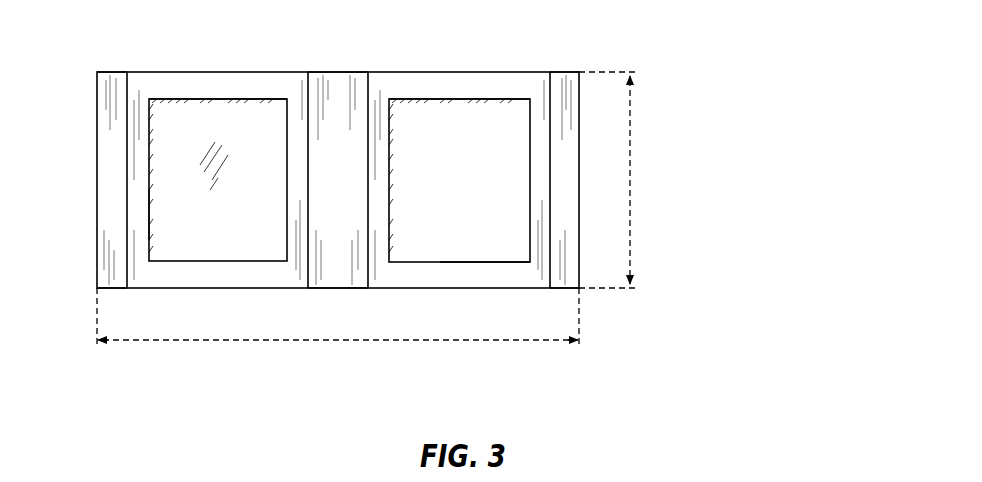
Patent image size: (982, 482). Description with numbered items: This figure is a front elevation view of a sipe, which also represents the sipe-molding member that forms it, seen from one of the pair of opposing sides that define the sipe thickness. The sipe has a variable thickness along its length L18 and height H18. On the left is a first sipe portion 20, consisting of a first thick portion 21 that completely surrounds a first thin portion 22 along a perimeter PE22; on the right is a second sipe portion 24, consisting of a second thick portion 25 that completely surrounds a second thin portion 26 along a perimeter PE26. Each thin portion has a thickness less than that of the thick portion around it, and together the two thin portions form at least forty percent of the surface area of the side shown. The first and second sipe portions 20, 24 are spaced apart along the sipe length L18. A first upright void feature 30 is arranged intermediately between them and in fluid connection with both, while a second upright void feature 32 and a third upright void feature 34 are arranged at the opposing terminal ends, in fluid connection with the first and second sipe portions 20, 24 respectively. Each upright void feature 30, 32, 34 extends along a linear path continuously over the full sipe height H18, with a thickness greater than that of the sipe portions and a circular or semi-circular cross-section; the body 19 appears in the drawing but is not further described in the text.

The sheet / frame panel 19 is at (187, 280).
The first sipe portion 20 is at (308, 72).
The first thick portion 21 is at (247, 86).
The first thin portion 22 is at (218, 180).
The second sipe portion 24 is at (550, 72).
The second thick portion 25 is at (483, 86).
The second thin portion 26 is at (459, 180).
The first upright void feature 30 is at (338, 72).
The second upright void feature 32 is at (113, 72).
The third upright void feature 34 is at (570, 72).
The perimeter of first thin portion PE22 is at (148, 218).
The perimeter of second thin portion PE26 is at (503, 262).
The sipe height H18 is at (630, 181).
The sipe length L18 is at (335, 341).